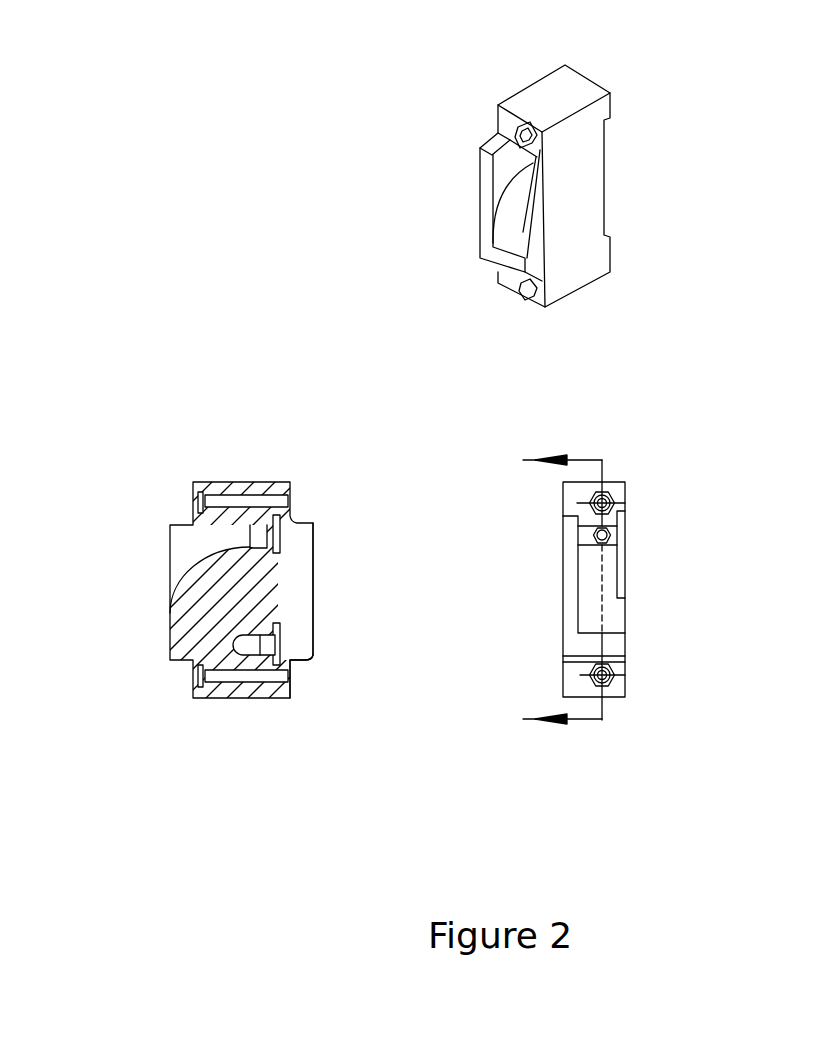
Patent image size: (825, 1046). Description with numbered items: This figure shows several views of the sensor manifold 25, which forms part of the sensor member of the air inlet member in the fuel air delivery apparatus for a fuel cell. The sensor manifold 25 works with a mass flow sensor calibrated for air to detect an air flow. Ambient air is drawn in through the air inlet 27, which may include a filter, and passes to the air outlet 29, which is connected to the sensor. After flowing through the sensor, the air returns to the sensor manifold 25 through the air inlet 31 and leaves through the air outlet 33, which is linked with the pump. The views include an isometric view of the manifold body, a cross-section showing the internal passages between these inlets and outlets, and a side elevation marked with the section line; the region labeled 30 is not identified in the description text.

The sensor manifold 25 is at (682, 183).
The air inlet 27 is at (195, 547).
The air outlet 29 is at (280, 535).
The housing wall 30 is at (305, 595).
The air inlet 31 is at (320, 638).
The air outlet 33 is at (243, 643).